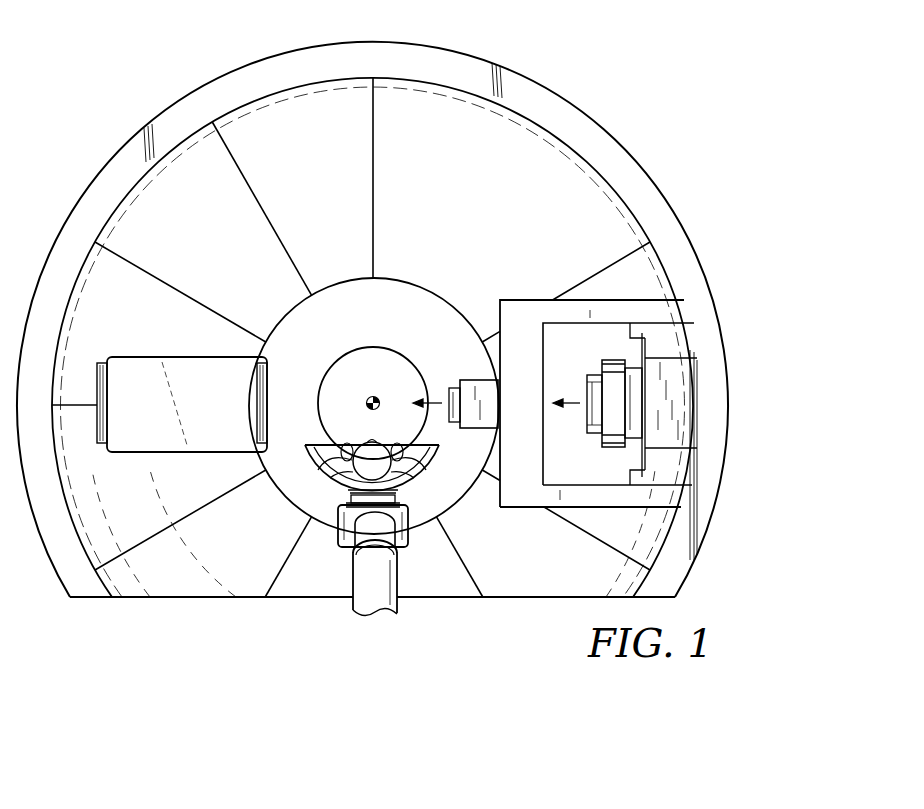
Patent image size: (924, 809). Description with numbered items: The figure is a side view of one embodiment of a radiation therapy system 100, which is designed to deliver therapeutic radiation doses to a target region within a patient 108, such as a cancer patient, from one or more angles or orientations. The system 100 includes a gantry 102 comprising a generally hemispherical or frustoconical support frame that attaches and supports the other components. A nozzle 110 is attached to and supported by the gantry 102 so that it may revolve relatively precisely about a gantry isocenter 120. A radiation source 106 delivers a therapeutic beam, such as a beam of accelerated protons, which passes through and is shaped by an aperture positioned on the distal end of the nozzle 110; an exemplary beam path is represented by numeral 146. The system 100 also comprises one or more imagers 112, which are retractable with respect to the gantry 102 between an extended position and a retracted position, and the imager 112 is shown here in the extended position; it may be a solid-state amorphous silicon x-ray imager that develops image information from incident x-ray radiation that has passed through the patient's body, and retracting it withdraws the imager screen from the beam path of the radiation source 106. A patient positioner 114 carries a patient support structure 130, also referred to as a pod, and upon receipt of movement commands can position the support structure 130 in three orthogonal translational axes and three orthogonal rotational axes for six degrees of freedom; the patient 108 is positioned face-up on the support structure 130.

The radiation therapy system 100 is at (186, 45).
The gantry 102 is at (537, 313).
The radiation source 106 is at (637, 392).
The patient 108 is at (363, 452).
The nozzle 110 is at (452, 381).
The imager 112 is at (212, 371).
The patient positioner 114 is at (335, 531).
The gantry isocenter 120 is at (368, 398).
The patient support structure 130 is at (432, 472).
The beam path 146 is at (437, 403).